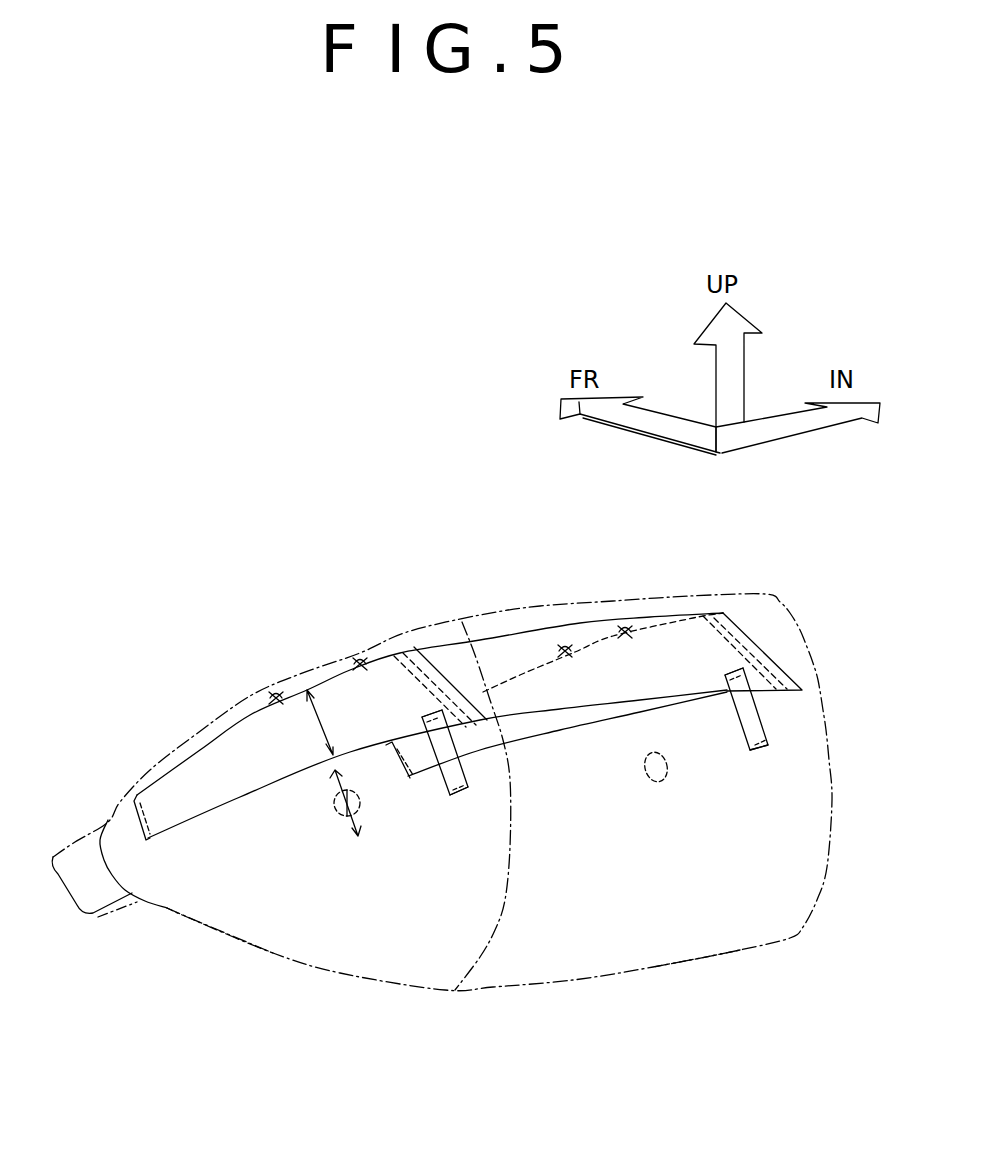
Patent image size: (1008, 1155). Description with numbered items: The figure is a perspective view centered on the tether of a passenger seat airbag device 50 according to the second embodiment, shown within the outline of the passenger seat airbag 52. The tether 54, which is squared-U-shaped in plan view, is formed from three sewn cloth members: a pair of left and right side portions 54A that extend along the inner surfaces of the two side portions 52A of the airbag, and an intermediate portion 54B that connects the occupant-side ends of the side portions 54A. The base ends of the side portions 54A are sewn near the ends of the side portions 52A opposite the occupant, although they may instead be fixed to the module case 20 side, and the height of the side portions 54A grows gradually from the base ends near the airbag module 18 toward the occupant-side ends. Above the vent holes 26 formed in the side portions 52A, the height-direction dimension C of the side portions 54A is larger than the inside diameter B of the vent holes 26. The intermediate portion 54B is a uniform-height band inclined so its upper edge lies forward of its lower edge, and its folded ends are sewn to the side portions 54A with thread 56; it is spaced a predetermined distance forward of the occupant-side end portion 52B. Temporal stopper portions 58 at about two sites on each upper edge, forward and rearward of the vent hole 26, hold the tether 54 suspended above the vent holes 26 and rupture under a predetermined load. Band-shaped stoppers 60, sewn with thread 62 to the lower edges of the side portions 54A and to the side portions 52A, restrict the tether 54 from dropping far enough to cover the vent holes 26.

The airbag module 18 is at (91, 921).
The module case 20 is at (118, 917).
The vent hole 26 is at (345, 825).
The passenger seat airbag device 50 is at (639, 559).
The passenger seat airbag 52 is at (833, 795).
The side portion of passenger seat airbag 52A is at (373, 933).
The occupant-side end portion of passenger seat airbag 52B is at (638, 883).
The tether 54 is at (241, 798).
The side portion of tether 54A is at (288, 780).
The intermediate portion of tether 54B is at (636, 705).
The thread 56 is at (437, 692).
The temporal stopper portion 58 is at (358, 664).
The stopper 60 is at (438, 776).
The thread 62 is at (420, 722).
The inside diameter of vent hole B is at (360, 806).
The height-direction dimension C is at (320, 733).